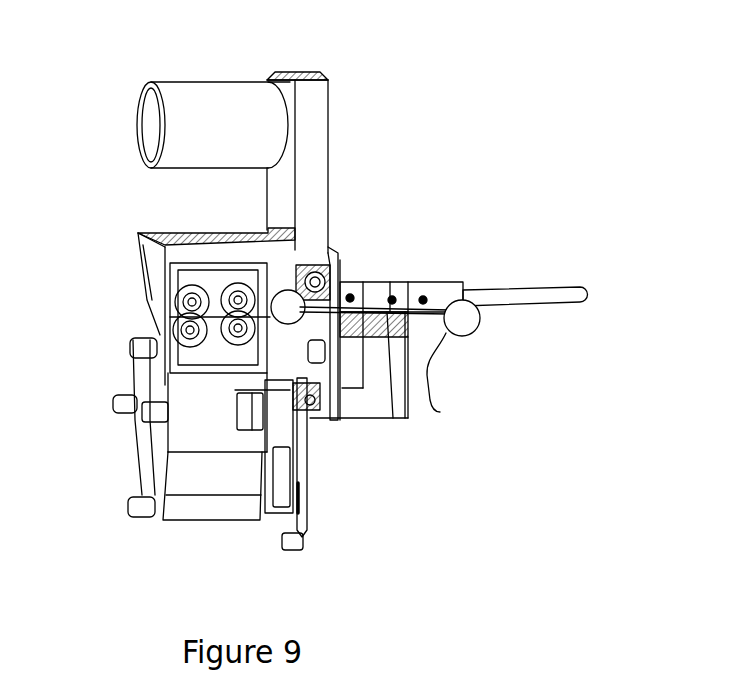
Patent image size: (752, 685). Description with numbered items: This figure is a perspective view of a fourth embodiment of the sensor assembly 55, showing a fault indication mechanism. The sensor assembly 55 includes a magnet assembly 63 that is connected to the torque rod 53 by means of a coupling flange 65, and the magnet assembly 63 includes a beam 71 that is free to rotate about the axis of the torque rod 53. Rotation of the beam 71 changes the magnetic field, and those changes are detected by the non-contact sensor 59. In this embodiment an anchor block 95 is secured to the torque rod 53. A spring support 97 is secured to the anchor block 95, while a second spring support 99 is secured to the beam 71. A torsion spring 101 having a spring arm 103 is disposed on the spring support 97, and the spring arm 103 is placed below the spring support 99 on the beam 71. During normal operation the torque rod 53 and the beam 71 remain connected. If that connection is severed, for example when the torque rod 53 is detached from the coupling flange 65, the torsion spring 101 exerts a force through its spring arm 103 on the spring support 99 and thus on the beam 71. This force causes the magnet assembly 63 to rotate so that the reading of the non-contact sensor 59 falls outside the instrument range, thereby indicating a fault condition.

The torque rod 53 is at (548, 287).
The sensor assembly 55 is at (194, 54).
The non-contact sensor 59 is at (178, 82).
The magnet assembly 63 is at (334, 44).
The coupling flange 65 is at (367, 420).
The beam 71 is at (328, 145).
The anchor block 95 is at (420, 282).
The spring support 97 is at (477, 338).
The spring support 99 is at (304, 278).
The torsion spring 101 is at (440, 412).
The spring arm 103 is at (390, 418).